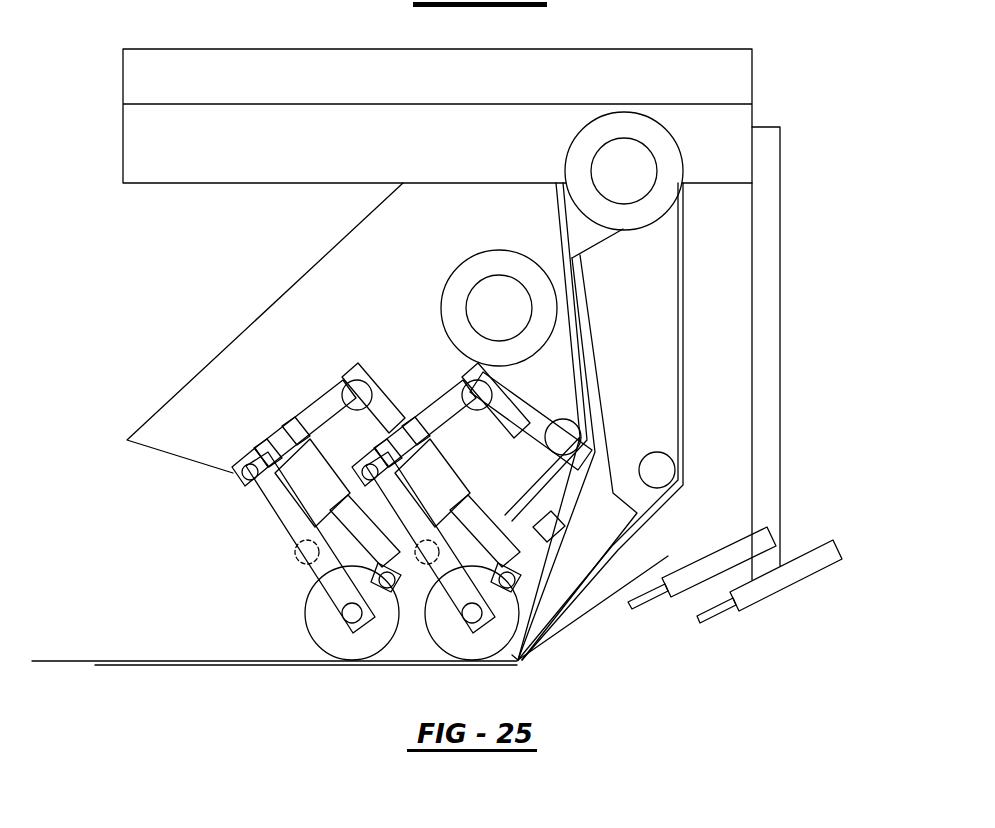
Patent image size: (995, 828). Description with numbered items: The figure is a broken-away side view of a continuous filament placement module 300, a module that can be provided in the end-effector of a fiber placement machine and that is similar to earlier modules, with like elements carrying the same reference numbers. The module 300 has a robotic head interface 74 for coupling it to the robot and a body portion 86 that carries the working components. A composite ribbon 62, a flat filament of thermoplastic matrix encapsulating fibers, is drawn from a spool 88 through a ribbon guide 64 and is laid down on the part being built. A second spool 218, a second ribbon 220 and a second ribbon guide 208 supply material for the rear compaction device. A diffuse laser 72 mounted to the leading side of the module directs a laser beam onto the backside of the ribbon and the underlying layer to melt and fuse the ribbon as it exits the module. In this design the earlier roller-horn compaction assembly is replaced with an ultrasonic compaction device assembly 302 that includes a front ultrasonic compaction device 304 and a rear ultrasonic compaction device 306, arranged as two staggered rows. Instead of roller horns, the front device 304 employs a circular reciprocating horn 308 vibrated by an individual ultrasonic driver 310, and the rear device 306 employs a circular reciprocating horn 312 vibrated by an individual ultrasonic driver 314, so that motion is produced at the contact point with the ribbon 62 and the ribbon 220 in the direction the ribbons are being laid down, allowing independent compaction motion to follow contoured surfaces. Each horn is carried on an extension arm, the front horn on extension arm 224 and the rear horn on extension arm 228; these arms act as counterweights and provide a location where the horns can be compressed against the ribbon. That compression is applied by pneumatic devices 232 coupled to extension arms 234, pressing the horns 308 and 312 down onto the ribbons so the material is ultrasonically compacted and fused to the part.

The continuous filament placement module 300 is at (108, 134).
The robotic head interface 74 is at (217, 58).
The spool 88 is at (652, 137).
The body portion 86 is at (333, 273).
The second spool 218 is at (465, 272).
The ribbon 62 is at (688, 350).
The ribbon 220 is at (580, 387).
The ribbon guide 208 is at (544, 551).
The ribbon guide 64 is at (558, 556).
The diffuse laser 72 is at (747, 603).
The ultrasonic compaction device assembly 302 is at (224, 582).
The pneumatic device 232 is at (318, 420).
The extension arm 234 is at (250, 483).
The ultrasonic driver 314 is at (313, 480).
The extension arm 228 is at (318, 573).
The extension arm 224 is at (338, 555).
The rear ultrasonic compaction device 306 is at (298, 634).
The circular reciprocating horn 312 is at (327, 633).
The ultrasonic driver 310 is at (440, 591).
The front ultrasonic compaction device 304 is at (420, 680).
The circular reciprocating horn 308 is at (513, 652).